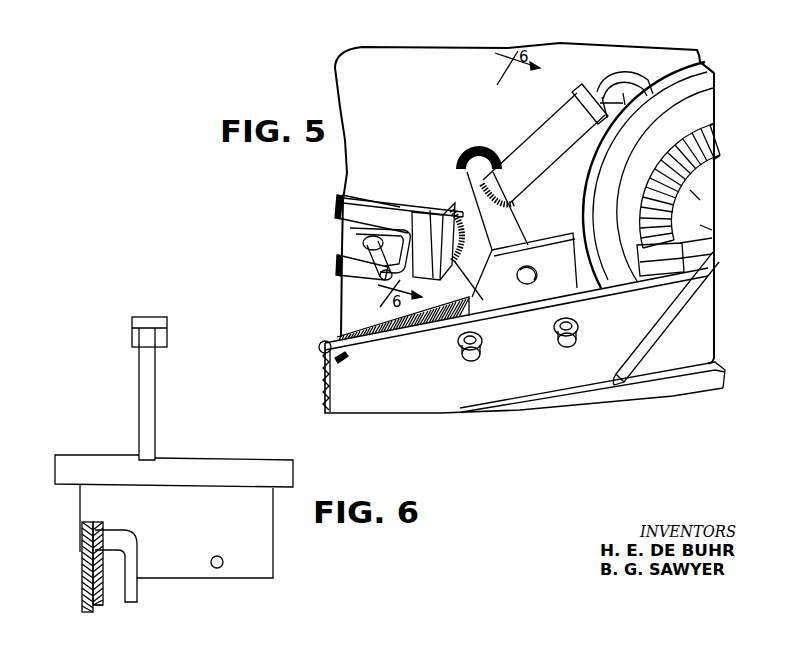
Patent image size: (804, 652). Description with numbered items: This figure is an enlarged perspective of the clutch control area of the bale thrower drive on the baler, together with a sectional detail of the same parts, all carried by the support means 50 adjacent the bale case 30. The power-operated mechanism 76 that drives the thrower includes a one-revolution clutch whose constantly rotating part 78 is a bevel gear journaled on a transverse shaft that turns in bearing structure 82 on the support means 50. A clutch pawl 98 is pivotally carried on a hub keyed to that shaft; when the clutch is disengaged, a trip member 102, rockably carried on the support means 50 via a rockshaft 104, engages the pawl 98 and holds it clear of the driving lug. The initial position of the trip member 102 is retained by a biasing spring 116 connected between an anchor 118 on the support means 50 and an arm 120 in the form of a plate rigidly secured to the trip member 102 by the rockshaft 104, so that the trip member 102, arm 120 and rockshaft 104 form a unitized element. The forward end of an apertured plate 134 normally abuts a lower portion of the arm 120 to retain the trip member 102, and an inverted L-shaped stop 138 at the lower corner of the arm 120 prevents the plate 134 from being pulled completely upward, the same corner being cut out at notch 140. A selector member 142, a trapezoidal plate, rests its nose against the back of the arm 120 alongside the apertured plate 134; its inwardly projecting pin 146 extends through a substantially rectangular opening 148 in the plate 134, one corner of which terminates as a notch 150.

In FIG. 5, the bale case 30 is at (717, 392).
In FIG. 5, the support means 50 is at (421, 52).
In FIG. 5, the power-operated mechanism 76 is at (714, 73).
In FIG. 5, the constantly rotating part 78 is at (712, 146).
In FIG. 5, the bearing structure 82 is at (706, 203).
In FIG. 5, the clutch pawl 98 is at (635, 80).
In FIG. 5, the trip member 102 is at (542, 140).
In FIG. 6, the trip member 102 is at (157, 381).
In FIG. 5, the rockshaft 104 is at (532, 283).
In FIG. 6, the rockshaft 104 is at (238, 450).
In FIG. 5, the biasing spring 116 is at (380, 335).
In FIG. 5, the anchor 118 is at (320, 347).
In FIG. 5, the arm 120 is at (470, 198).
In FIG. 6, the arm 120 is at (267, 565).
In FIG. 5, the apertured plate 134 is at (343, 210).
In FIG. 6, the apertured plate 134 is at (103, 593).
In FIG. 5, the inverted L-shaped stop 138 is at (436, 208).
In FIG. 6, the inverted L-shaped stop 138 is at (134, 538).
In FIG. 6, the notch 140 is at (82, 553).
In FIG. 5, the selector member 142 is at (453, 210).
In FIG. 6, the selector member 142 is at (82, 584).
In FIG. 5, the pin 146 is at (380, 280).
In FIG. 5, the rectangular opening 148 is at (348, 237).
In FIG. 5, the notch 150 is at (412, 222).